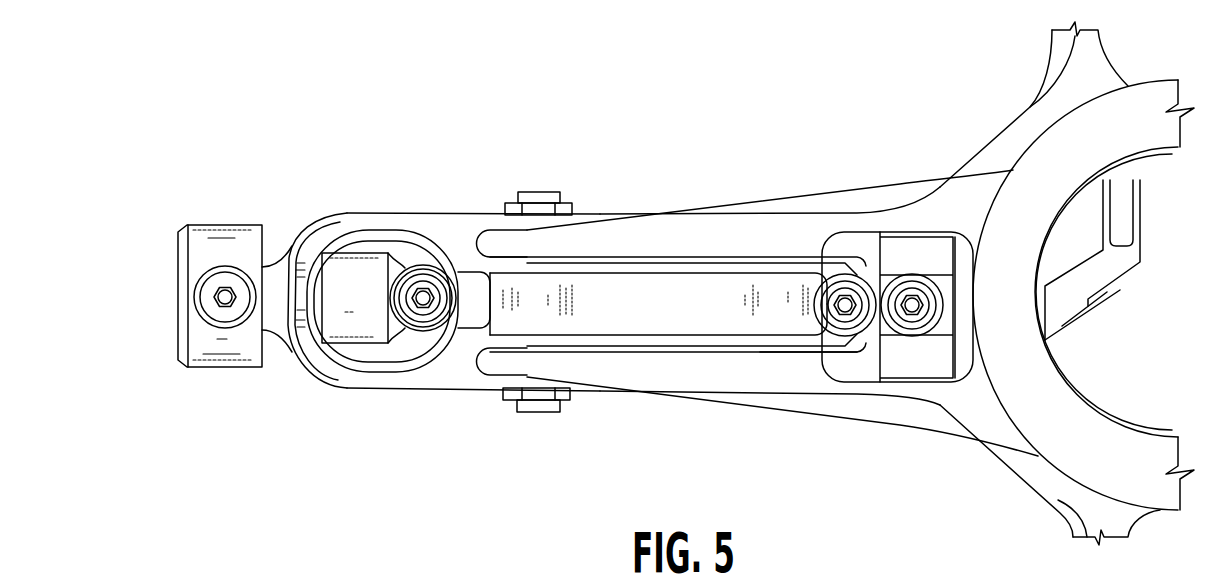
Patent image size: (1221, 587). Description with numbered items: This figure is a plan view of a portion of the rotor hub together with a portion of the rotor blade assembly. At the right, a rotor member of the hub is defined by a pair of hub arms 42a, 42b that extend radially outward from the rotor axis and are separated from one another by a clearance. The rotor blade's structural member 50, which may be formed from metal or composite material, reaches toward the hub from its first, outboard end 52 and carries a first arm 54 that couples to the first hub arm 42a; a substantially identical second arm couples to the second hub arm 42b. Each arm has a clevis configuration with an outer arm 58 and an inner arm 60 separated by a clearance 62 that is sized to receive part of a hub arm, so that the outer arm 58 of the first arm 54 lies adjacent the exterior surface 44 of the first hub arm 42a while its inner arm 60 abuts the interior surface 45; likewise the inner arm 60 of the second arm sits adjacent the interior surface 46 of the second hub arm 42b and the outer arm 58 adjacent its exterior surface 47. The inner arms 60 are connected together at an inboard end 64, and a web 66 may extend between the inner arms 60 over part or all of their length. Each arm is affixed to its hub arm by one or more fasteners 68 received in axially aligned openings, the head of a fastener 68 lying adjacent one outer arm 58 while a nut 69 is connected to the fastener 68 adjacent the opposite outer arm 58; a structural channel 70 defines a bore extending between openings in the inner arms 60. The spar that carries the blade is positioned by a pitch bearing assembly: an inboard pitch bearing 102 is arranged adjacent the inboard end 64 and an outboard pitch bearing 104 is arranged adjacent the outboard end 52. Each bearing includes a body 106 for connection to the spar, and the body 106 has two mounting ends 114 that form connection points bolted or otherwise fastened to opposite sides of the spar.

The first hub arm 42a is at (682, 232).
The second hub arm 42b is at (670, 375).
The exterior surface 44 is at (657, 205).
The interior surface 45 is at (690, 270).
The interior surface 46 is at (652, 350).
The exterior surface 47 is at (700, 400).
The structural member 50 is at (332, 212).
The outboard end 52 is at (313, 360).
The first arm 54 is at (463, 227).
The outer arm 58 is at (493, 230).
The inner arm 60 is at (603, 250).
The clearance 62 is at (485, 237).
The inboard end 64 is at (855, 352).
The web 66 is at (703, 325).
The fastener 68 is at (538, 192).
The nut 69 is at (538, 395).
The structural channel 70 is at (525, 372).
The inboard pitch bearing 102 is at (932, 240).
The outboard pitch bearing 104 is at (177, 263).
The body 106 is at (208, 238).
The mounting end 114 is at (222, 315).